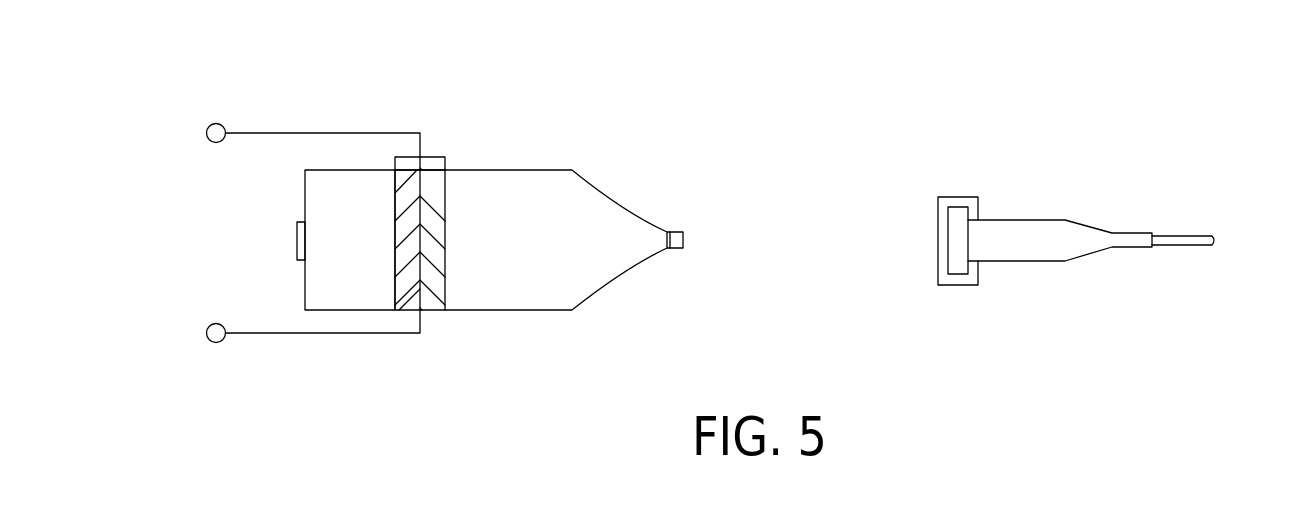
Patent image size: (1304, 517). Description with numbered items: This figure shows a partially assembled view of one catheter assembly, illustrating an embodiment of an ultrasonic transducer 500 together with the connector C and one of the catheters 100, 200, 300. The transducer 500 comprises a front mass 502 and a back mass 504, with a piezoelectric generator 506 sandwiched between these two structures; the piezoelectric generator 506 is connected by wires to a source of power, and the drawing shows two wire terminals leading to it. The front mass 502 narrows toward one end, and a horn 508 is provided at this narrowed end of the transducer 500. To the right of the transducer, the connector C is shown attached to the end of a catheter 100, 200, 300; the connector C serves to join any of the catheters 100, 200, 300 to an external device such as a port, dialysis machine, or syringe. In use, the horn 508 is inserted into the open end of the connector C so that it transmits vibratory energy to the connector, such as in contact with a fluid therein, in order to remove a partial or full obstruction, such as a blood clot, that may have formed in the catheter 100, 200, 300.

The transducer 500 is at (561, 101).
The front mass 502 is at (572, 170).
The back mass 504 is at (305, 188).
The piezoelectric generator 506 is at (435, 308).
The horn 508 is at (674, 230).
The connector C is at (1037, 220).
The catheter 100 is at (1207, 203).
The catheter 200 is at (1207, 203).
The catheter 300 is at (1208, 192).